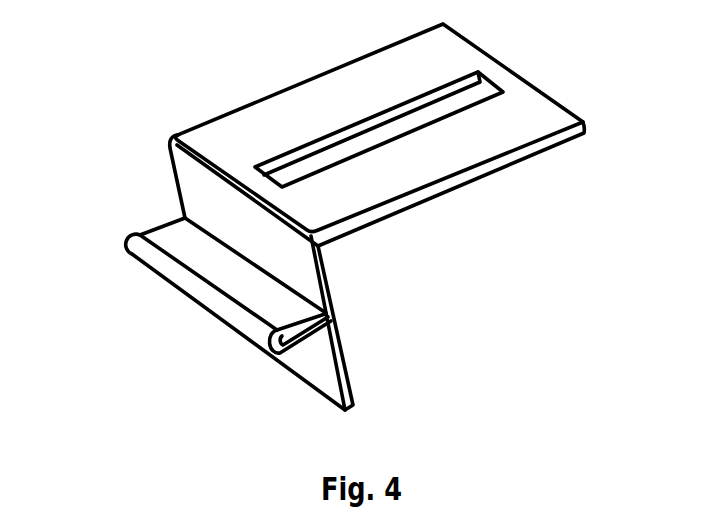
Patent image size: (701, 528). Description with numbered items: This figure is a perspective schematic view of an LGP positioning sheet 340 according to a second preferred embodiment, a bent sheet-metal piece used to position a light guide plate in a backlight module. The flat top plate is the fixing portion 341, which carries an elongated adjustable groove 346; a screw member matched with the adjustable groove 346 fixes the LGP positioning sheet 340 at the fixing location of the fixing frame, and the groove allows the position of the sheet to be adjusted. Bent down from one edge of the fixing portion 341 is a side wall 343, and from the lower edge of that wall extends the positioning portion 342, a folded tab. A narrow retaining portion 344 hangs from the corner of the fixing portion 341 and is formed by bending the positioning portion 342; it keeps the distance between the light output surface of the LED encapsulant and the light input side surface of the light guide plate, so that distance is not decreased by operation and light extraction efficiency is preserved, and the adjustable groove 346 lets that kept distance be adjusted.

The LGP positioning sheet 340 is at (351, 217).
The fixing portion 341 is at (542, 116).
The positioning portion 342 is at (215, 278).
The side wall 343 is at (208, 199).
The retaining portion 344 is at (330, 366).
The adjustable groove 346 is at (392, 130).